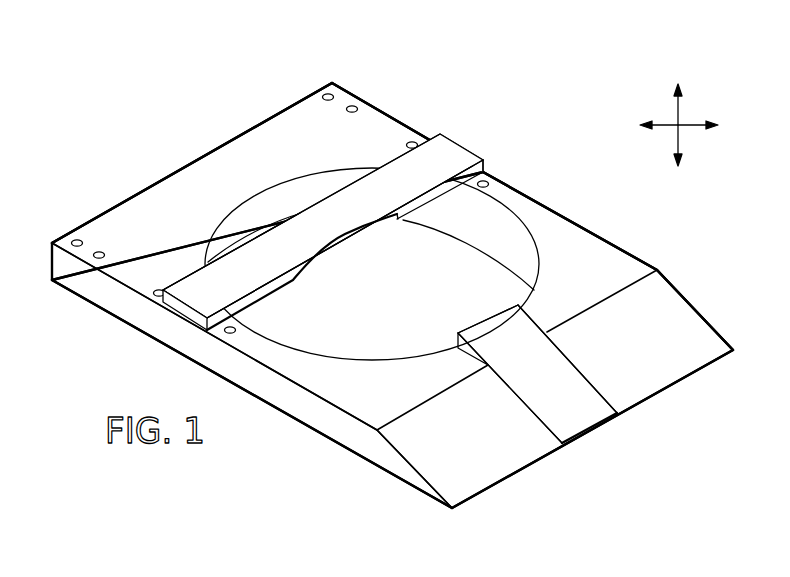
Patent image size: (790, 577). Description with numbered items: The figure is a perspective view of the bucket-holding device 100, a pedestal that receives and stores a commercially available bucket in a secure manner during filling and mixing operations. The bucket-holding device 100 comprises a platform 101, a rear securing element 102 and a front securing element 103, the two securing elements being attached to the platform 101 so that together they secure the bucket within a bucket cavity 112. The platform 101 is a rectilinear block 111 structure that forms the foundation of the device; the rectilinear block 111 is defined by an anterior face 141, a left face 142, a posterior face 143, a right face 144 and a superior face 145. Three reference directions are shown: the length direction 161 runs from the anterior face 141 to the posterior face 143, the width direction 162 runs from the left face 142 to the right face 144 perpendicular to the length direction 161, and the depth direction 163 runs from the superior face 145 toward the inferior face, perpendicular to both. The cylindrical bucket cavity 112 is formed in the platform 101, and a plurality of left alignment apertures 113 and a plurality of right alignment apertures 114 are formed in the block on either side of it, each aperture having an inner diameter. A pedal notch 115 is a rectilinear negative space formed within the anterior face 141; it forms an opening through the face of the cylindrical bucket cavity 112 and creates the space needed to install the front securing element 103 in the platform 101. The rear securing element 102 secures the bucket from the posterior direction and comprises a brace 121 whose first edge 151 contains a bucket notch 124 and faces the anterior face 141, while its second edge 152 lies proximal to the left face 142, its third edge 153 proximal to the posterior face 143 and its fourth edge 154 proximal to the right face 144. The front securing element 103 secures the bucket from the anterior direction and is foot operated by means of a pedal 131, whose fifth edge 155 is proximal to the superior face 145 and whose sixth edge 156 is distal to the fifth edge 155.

The bucket-holding device 100 is at (86, 126).
The platform 101 is at (96, 196).
The rear securing element 102 is at (470, 150).
The front securing element 103 is at (585, 430).
The rectilinear block 111 is at (239, 150).
The bucket cavity 112 is at (565, 217).
The plurality of left alignment apertures 113 is at (53, 279).
The plurality of right alignment apertures 114 is at (345, 102).
The pedal notch 115 is at (568, 356).
The brace 121 is at (427, 152).
The bucket notch 124 is at (338, 239).
The pedal 131 is at (563, 425).
The anterior face 141 is at (522, 450).
The left face 142 is at (283, 397).
The posterior face 143 is at (160, 187).
The right face 144 is at (512, 185).
The superior face 145 is at (615, 266).
The first edge 151 is at (256, 297).
The second edge 152 is at (183, 313).
The third edge 153 is at (193, 277).
The fourth edge 154 is at (486, 158).
The fifth edge 155 is at (483, 320).
The sixth edge 156 is at (607, 413).
The length direction 161 is at (635, 125).
The width direction 162 is at (722, 125).
The depth direction 163 is at (678, 108).